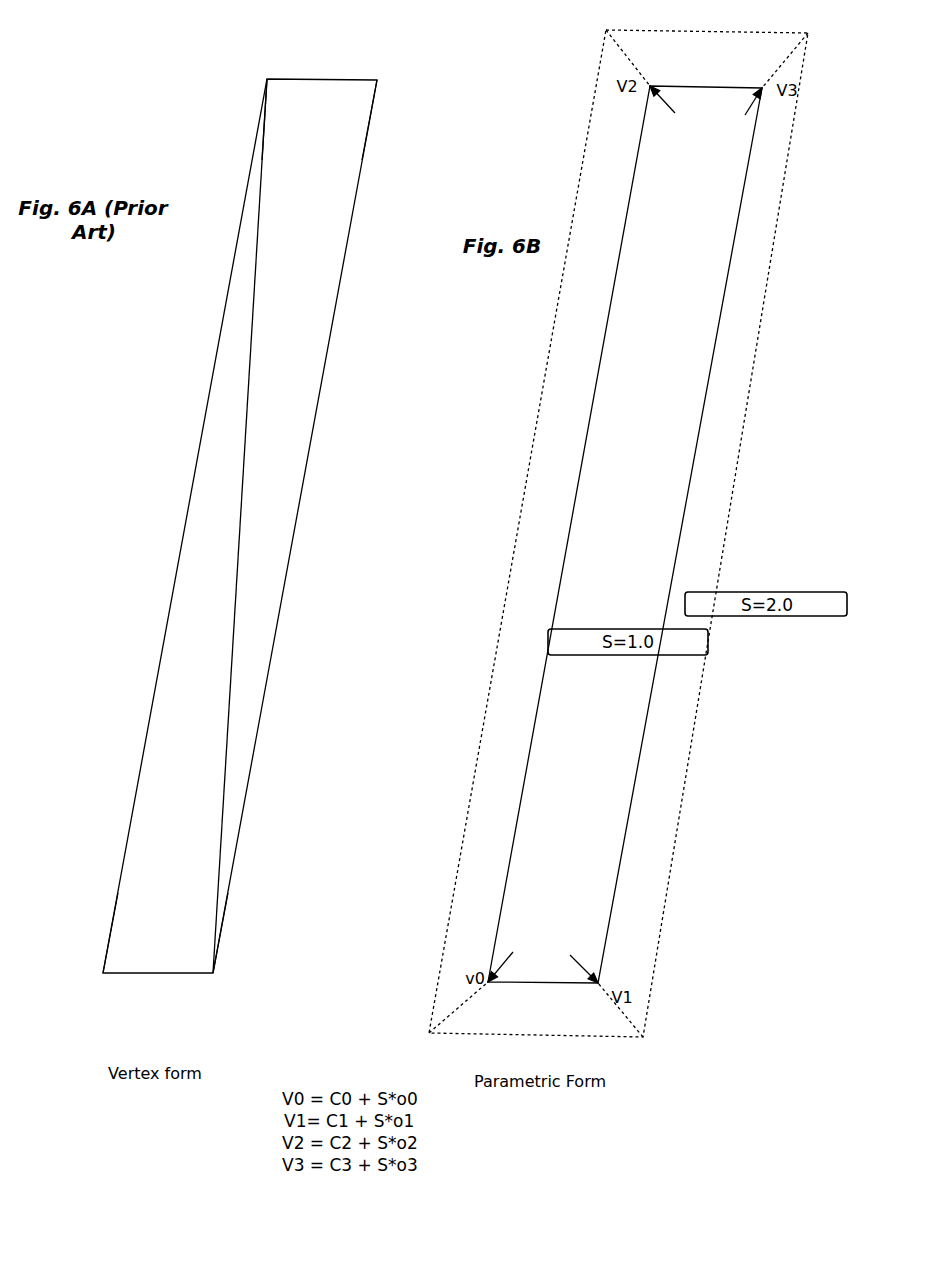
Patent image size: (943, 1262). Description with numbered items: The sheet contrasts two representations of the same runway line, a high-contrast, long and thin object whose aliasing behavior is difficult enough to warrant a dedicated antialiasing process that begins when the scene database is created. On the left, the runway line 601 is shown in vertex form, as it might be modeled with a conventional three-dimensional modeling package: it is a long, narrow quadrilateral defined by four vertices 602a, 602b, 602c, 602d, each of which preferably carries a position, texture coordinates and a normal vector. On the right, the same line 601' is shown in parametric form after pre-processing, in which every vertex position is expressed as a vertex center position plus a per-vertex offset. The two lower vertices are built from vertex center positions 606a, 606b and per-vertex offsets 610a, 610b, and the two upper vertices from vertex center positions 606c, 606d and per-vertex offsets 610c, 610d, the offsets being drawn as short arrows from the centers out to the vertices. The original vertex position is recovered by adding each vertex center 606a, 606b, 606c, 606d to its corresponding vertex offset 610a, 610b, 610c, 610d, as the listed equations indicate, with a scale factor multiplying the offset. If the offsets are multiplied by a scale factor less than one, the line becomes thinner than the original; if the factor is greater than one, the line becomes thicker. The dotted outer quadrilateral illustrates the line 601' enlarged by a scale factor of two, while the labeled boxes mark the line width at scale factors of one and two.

In FIG. 6A, the runway line 601 is at (240, 526).
In FIG. 6A, the vertex 602a is at (93, 960).
In FIG. 6A, the vertex 602b is at (235, 997).
In FIG. 6A, the vertex 602c is at (255, 89).
In FIG. 6A, the vertex 602d is at (378, 87).
In FIG. 6B, the pre-processed runway line 601' is at (625, 534).
In FIG. 6B, the vertex center position 606a is at (513, 930).
In FIG. 6B, the vertex center position 606b is at (583, 943).
In FIG. 6B, the vertex center position 606c is at (655, 130).
In FIG. 6B, the vertex center position 606d is at (733, 142).
In FIG. 6B, the per vertex offset 610a is at (488, 982).
In FIG. 6B, the per vertex offset 610b is at (598, 983).
In FIG. 6B, the per vertex offset 610c is at (652, 88).
In FIG. 6B, the per vertex offset 610d is at (762, 88).